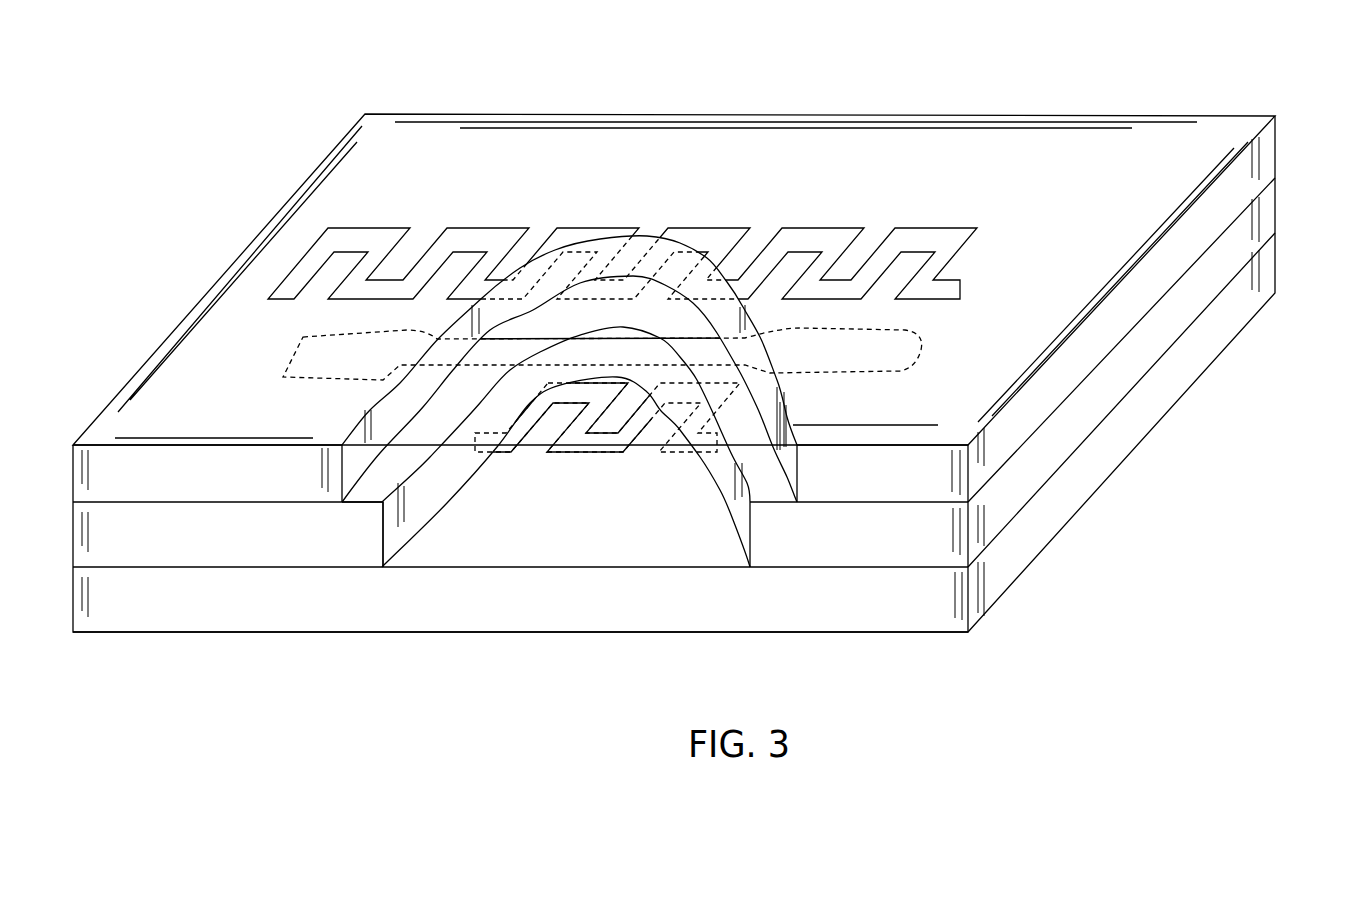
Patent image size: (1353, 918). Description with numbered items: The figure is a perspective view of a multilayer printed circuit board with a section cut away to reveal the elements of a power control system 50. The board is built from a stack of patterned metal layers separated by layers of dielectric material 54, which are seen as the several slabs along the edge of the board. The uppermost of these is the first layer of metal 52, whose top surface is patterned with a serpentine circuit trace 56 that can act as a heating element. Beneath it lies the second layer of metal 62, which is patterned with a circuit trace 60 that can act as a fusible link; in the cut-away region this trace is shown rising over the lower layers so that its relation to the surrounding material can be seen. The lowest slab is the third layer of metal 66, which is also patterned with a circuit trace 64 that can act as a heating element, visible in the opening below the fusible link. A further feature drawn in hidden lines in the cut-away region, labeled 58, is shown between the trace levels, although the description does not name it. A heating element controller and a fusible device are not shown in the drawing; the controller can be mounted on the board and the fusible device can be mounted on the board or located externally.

The power control system 50 is at (841, 74).
The first layer of metal 52 is at (1185, 132).
The layers of dielectric material 54 is at (1278, 143).
The circuit trace 56 is at (383, 228).
The embedded conductor 58 is at (291, 355).
The circuit trace 60 is at (489, 370).
The second layer of metal 62 is at (361, 490).
The circuit trace 64 is at (616, 453).
The third layer of metal 66 is at (535, 552).